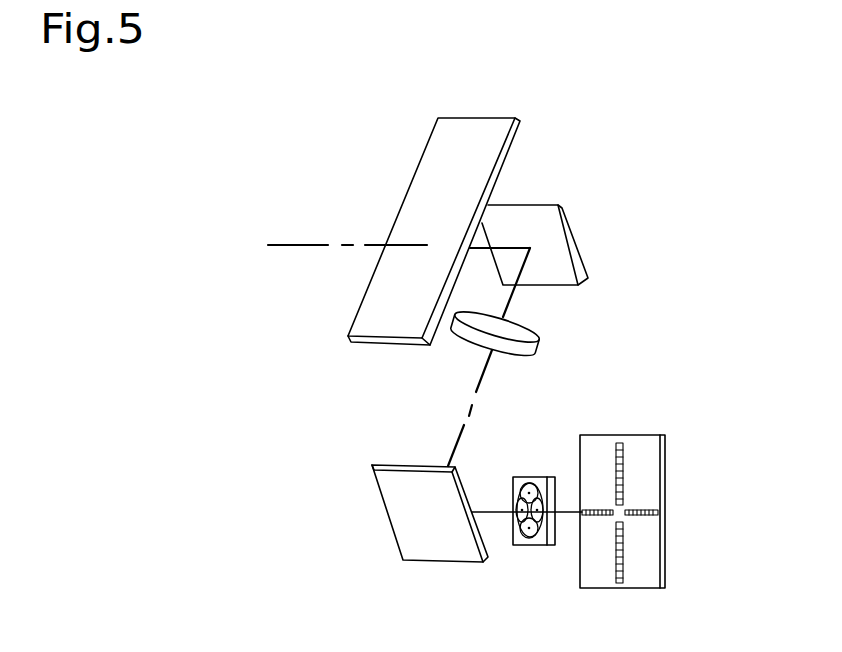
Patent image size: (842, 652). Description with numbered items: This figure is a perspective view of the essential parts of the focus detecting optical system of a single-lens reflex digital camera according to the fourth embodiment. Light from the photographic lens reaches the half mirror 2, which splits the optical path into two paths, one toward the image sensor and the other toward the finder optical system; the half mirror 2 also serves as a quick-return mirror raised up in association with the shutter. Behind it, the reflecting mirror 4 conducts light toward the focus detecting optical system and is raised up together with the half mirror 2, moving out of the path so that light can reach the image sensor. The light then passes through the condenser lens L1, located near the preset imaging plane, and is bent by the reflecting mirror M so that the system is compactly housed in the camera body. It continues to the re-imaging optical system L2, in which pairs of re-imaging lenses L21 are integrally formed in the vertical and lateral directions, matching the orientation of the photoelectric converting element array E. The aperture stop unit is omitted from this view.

The half mirror 2 is at (408, 218).
The reflecting mirror 4 is at (548, 222).
The condenser lens L1 is at (545, 353).
The reflecting mirror M is at (388, 488).
The re-imaging optical system L2 is at (528, 519).
The re-imaging lenses L21 is at (524, 484).
The photoelectric converting element array E is at (622, 573).